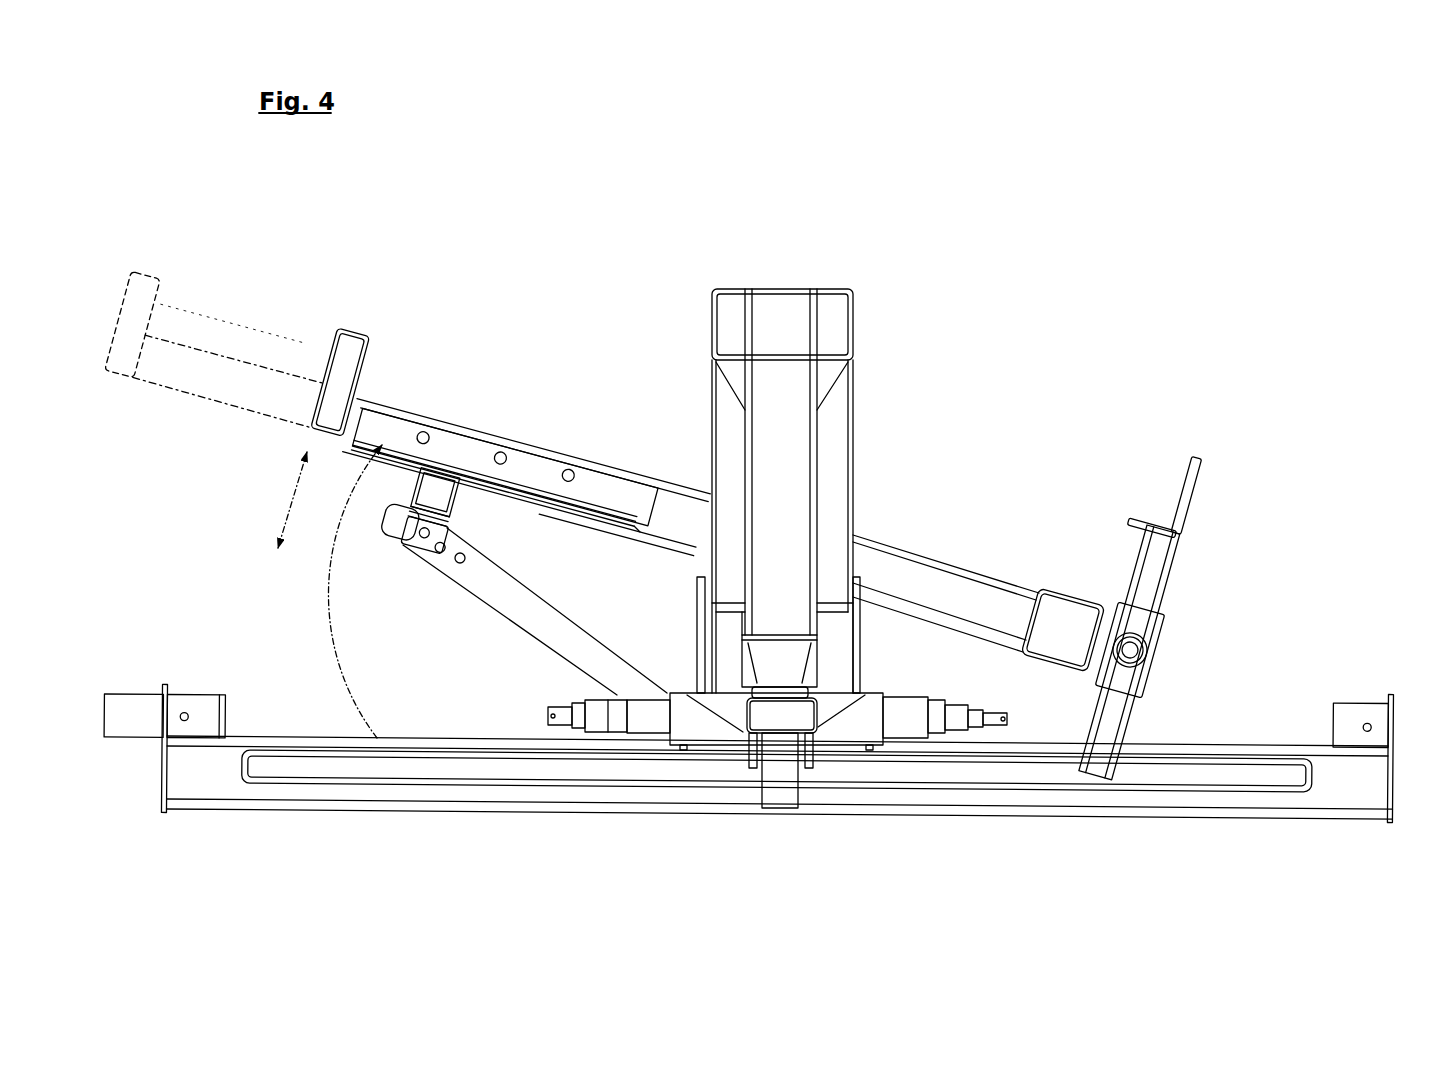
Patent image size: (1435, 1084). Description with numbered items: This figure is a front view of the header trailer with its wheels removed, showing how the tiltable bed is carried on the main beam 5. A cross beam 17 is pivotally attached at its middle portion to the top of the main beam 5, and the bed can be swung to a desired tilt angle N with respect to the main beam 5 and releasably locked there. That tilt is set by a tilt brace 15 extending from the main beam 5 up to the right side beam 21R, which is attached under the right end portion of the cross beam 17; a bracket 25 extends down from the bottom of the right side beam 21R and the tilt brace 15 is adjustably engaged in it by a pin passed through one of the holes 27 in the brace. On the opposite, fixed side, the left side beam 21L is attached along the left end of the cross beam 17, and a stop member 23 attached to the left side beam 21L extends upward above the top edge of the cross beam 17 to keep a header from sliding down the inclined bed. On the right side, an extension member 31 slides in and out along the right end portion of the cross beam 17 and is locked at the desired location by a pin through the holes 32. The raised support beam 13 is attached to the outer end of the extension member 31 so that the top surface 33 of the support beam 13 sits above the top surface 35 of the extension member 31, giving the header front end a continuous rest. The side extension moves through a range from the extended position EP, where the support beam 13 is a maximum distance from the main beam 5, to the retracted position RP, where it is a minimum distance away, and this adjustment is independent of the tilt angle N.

The main beam 5 is at (725, 493).
The support beam 13 is at (285, 299).
The tilt braces 15 is at (535, 611).
The cross beams 17 is at (946, 574).
The right side beam 21R is at (474, 522).
The left side beam 21L is at (1063, 645).
The stop members 23 is at (1156, 613).
The brackets 25 is at (369, 536).
The holes 27 is at (415, 583).
The extension members 31 is at (513, 433).
The holes 32 is at (502, 422).
The top surface of the support beam 33 is at (383, 354).
The top surface of the extension members 35 is at (536, 436).
The extended position EP is at (115, 406).
The retracted position RP is at (263, 490).
The tilt angle N is at (286, 591).